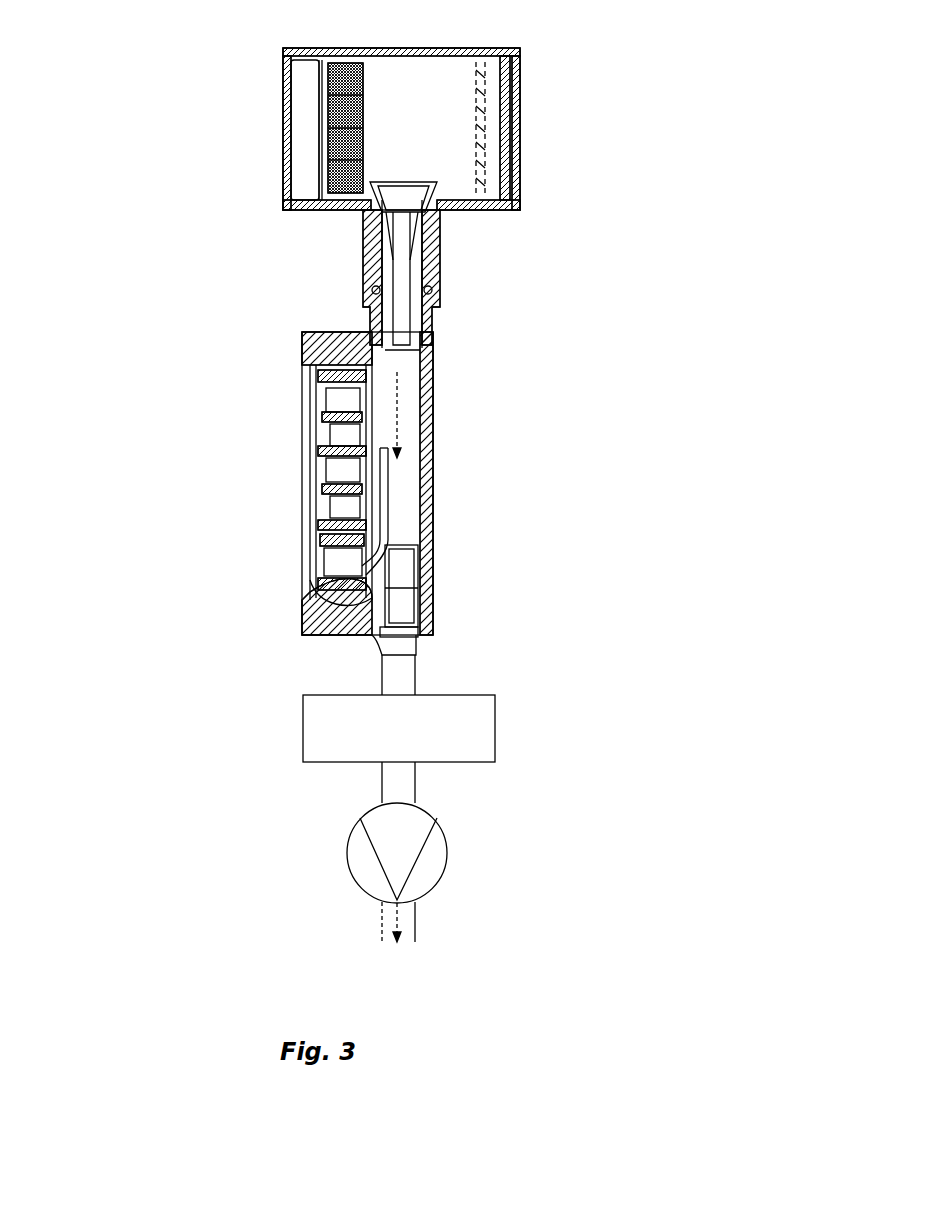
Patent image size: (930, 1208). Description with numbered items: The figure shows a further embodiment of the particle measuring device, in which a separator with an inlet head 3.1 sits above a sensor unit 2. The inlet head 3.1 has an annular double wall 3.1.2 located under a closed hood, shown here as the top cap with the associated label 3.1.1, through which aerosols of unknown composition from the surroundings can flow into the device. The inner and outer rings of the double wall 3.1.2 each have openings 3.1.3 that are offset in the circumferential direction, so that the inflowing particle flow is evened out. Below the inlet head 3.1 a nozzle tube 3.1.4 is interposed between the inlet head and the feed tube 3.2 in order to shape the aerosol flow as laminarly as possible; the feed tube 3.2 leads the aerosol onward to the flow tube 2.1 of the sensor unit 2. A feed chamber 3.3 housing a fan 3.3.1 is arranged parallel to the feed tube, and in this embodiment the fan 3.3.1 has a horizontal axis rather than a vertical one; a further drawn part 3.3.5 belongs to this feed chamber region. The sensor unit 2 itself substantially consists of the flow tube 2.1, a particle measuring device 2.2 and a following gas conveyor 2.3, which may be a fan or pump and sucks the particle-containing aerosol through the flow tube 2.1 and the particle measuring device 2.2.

The sensor unit 2 is at (542, 676).
The flow tube 2.1 is at (392, 667).
The particle measuring device 2.2 is at (315, 738).
The gas conveyor 2.3 is at (347, 882).
The inlet head 3.1 is at (208, 238).
The canister lid 3.1.1 is at (435, 48).
The annular double wall 3.1.2 is at (508, 100).
The openings 3.1.3 is at (480, 165).
The nozzle tube 3.1.4 is at (438, 243).
The feed tube 3.2 is at (420, 532).
The feed chamber 3.3 is at (280, 559).
The fan 3.3.1 is at (292, 472).
The drain tube 3.3.5 is at (400, 478).